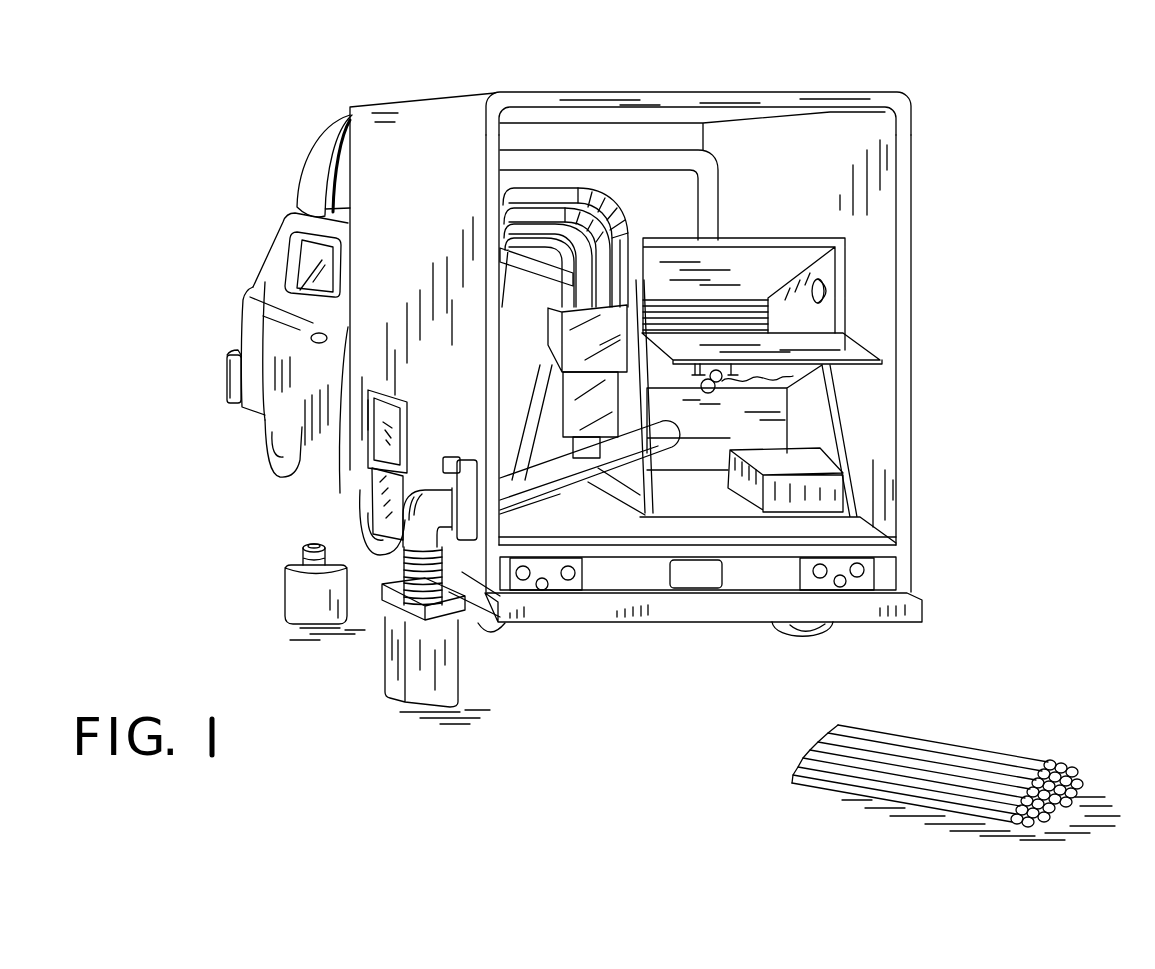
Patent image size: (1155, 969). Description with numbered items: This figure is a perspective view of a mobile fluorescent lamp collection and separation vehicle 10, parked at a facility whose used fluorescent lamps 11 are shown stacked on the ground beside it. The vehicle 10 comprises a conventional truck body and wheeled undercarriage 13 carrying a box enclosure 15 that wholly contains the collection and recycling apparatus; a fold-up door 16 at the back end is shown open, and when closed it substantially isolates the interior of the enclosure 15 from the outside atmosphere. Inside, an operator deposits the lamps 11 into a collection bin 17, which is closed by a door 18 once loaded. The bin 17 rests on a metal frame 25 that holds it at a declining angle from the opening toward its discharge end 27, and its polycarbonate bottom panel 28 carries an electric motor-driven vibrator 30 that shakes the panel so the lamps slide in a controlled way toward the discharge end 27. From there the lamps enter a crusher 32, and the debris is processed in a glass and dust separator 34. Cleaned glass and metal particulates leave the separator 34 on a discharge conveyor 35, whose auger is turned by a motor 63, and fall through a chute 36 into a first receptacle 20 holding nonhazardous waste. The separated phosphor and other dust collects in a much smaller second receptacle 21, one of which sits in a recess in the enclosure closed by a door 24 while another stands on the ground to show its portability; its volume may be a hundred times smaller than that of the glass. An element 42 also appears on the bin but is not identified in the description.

The mobile fluorescent lamp collection and separation vehicle 10 is at (729, 90).
The fluorescent lamps 11 is at (976, 797).
The truck body and wheeled undercarriage 13 is at (297, 415).
The box enclosure 15 is at (911, 525).
The fold-up door 16 is at (856, 107).
The collection bin 17 is at (835, 262).
The door 18 is at (858, 346).
The first receptacle 20 is at (393, 683).
The second receptacle 21 is at (385, 437).
The door 24 is at (380, 492).
The metal frame 25 is at (647, 512).
The discharge end 27 is at (662, 388).
The bottom panel 28 is at (745, 373).
The vibrator 30 is at (712, 389).
The crusher 32 is at (765, 425).
The glass and dust separator 34 is at (556, 357).
The discharge conveyor 35 is at (520, 490).
The chute 36 is at (387, 600).
The knob 42 is at (832, 290).
The motor 63 is at (662, 446).